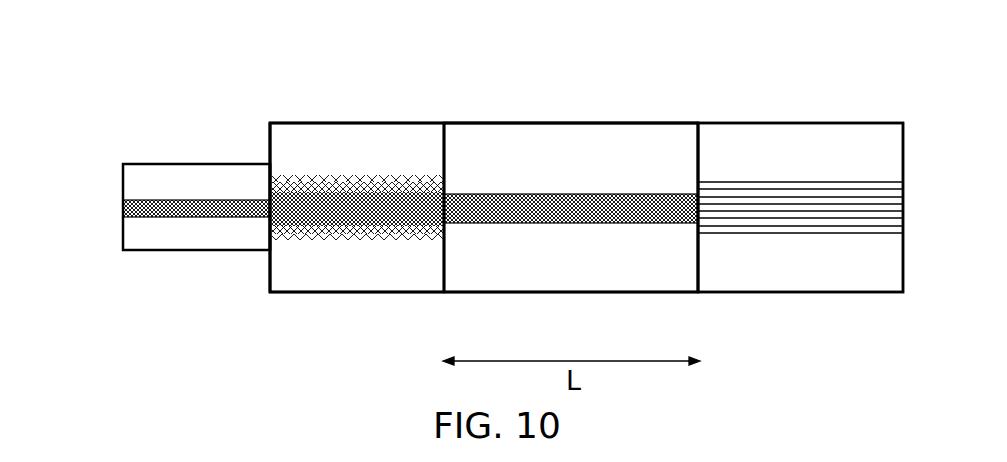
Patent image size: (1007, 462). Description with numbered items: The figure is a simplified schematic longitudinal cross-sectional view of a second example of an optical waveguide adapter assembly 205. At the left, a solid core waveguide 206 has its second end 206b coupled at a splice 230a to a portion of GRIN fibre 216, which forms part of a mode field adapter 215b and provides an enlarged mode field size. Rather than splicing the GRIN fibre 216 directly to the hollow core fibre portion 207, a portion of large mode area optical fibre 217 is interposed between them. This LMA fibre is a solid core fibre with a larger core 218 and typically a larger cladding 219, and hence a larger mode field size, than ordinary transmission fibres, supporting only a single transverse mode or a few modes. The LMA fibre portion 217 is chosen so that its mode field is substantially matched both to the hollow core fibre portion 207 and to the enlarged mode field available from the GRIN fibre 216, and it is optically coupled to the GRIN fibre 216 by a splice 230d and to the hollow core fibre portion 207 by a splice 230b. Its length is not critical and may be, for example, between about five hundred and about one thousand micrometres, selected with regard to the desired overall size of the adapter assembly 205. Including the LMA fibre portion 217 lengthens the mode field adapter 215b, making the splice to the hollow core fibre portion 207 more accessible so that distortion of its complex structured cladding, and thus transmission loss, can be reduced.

The optical waveguide adapter assembly 205 is at (247, 78).
The mode field adapter 215b is at (700, 107).
The solid core waveguide 206 is at (160, 252).
The splice 230a is at (268, 163).
The second end 206b is at (269, 253).
The GRIN fibre 216 is at (335, 293).
The splice 230d is at (443, 293).
The large mode area optical fibre portion 217 is at (613, 293).
The core 218 is at (573, 223).
The cladding 219 is at (685, 134).
The splice 230b is at (698, 293).
The hollow core fibre portion 207 is at (818, 293).